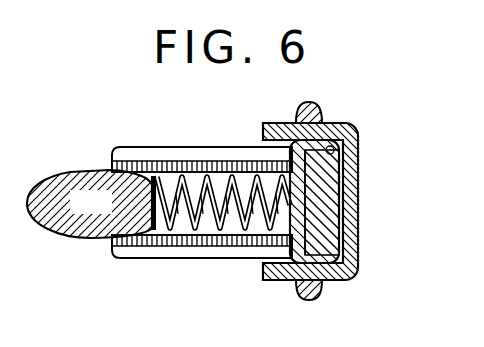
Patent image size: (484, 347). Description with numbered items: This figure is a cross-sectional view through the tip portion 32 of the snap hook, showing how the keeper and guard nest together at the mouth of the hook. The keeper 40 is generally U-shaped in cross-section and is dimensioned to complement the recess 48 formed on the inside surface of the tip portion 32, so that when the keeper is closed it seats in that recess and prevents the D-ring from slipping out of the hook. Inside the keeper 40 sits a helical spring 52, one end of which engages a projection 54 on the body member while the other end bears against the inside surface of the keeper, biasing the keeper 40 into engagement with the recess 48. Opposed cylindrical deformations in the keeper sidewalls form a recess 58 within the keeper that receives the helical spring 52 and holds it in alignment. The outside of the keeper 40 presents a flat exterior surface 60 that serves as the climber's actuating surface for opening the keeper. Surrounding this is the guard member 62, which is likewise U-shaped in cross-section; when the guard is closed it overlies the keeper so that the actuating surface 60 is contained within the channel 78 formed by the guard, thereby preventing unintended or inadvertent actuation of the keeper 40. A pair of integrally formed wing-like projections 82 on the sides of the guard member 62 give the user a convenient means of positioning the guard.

The tip portion 32 is at (402, 250).
The keeper 40 is at (182, 147).
The recess 48 is at (359, 225).
The helical spring 52 is at (246, 238).
The projection 54 is at (176, 238).
The recess 58 is at (200, 240).
The flat exterior surface 60 is at (345, 200).
The guard member 62 is at (335, 216).
The channel 78 is at (334, 150).
The wing-like projections 82 is at (317, 102).